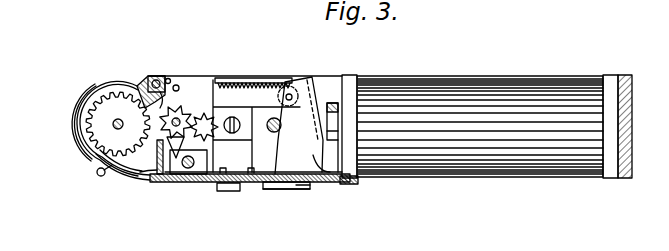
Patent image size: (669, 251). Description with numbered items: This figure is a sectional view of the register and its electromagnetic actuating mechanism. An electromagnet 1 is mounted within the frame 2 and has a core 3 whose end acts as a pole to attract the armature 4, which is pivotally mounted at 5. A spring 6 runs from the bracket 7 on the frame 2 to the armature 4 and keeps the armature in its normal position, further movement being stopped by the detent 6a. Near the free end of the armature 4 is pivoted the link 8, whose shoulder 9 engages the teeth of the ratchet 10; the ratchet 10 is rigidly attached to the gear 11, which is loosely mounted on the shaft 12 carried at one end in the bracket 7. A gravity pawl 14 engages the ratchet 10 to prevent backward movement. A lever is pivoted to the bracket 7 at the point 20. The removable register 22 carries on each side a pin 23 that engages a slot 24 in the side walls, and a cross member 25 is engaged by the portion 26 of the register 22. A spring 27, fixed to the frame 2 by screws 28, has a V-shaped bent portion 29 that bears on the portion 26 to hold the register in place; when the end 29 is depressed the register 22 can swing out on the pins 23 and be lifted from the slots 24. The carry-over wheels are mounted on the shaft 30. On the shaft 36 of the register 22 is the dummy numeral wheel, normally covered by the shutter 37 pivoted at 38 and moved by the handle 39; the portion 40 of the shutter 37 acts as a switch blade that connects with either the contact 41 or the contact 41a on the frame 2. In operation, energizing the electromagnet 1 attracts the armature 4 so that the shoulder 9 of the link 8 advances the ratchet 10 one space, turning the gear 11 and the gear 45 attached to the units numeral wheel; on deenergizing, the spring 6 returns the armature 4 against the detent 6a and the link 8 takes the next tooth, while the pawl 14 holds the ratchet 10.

The electromagnet 1 is at (492, 84).
The frame 2 is at (437, 76).
The core 3 is at (333, 103).
The armature 4 is at (303, 82).
The pivot 5 is at (349, 182).
The spring 6 is at (272, 84).
The detent 6a is at (270, 190).
The bracket 7 is at (180, 115).
The link 8 is at (247, 80).
The shoulder 9 is at (178, 86).
The ratchet 10 is at (168, 152).
The gear 11 is at (160, 150).
The shaft 12 is at (222, 98).
The gravity pawl 14 is at (192, 168).
The pivot point 20 is at (168, 78).
The removable register 22 is at (138, 92).
The pin 23 is at (152, 80).
The slot 24 is at (161, 92).
The cross member 25 is at (158, 182).
The portion of the register 26 is at (140, 165).
The spring 27 is at (190, 180).
The screws 28 is at (230, 170).
The V-shaped bent portion 29 is at (138, 180).
The shaft 30 is at (125, 170).
The shaft of the register 36 is at (114, 120).
The shutter 37 is at (76, 105).
The pivot 38 is at (228, 191).
The handle 39 is at (97, 172).
The switch blade portion 40 is at (286, 190).
The contact 41 is at (321, 181).
The contact 41a is at (300, 189).
The gear 45 is at (80, 130).